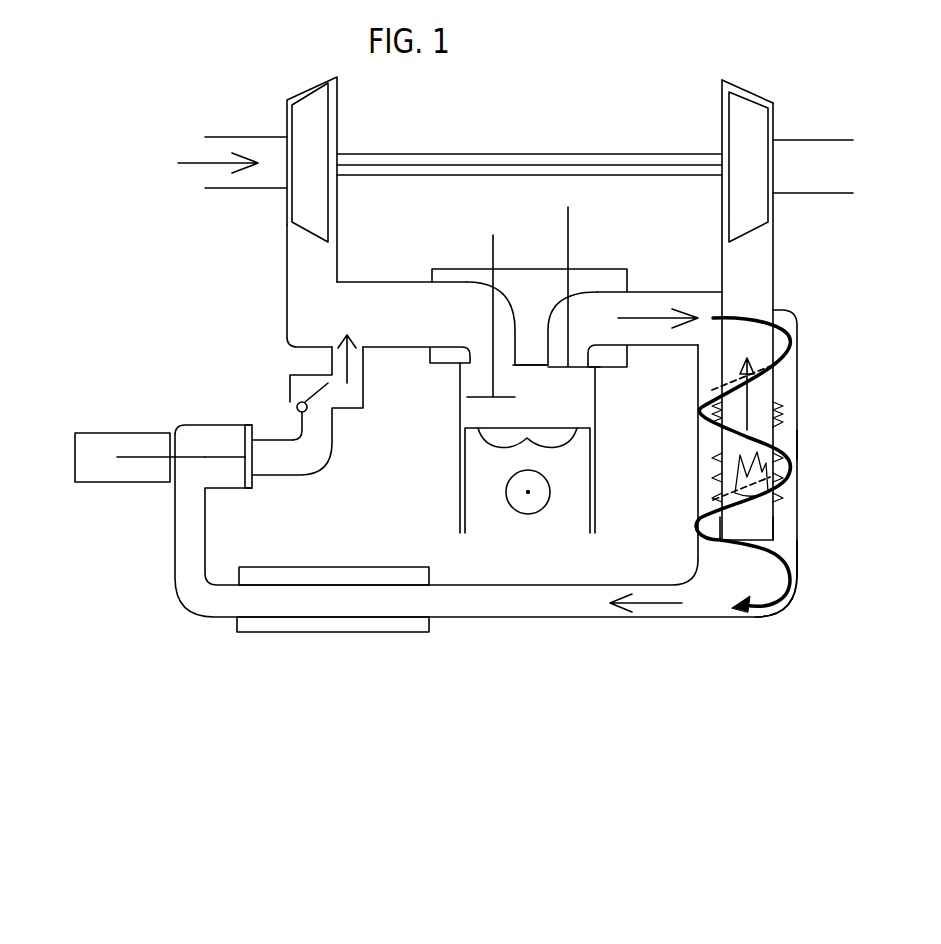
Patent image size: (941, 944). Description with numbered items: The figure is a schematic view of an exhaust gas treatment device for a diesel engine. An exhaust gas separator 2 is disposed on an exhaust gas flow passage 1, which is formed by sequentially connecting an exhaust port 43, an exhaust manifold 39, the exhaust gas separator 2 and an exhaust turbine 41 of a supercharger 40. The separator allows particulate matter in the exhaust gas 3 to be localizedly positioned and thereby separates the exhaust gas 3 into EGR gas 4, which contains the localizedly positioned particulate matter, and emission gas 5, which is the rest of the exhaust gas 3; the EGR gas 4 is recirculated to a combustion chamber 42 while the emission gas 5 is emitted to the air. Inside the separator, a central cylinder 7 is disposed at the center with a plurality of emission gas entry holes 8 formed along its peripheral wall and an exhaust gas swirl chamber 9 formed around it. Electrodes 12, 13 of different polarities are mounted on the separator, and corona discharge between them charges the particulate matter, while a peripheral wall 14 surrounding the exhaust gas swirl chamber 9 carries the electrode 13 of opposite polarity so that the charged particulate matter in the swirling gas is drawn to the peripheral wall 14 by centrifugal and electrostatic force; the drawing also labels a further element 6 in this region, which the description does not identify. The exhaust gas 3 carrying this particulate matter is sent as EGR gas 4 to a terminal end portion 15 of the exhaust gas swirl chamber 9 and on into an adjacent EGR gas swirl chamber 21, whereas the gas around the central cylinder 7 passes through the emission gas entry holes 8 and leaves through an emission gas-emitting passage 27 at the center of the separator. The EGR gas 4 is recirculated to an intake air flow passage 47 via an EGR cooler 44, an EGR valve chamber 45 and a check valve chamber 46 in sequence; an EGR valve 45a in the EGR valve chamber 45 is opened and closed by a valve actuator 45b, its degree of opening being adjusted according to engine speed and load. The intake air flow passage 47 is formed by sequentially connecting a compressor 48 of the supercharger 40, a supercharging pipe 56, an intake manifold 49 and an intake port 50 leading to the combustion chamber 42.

The exhaust gas flow passage 1 is at (679, 274).
The exhaust gas separator 2 is at (817, 433).
The exhaust gas 3 is at (645, 318).
The EGR gas 4 is at (350, 363).
The emission gas 5 is at (730, 387).
The first electrode 6 is at (780, 415).
The central cylinder 7 is at (773, 520).
The emission gas entry holes 8 is at (773, 482).
The exhaust gas swirl chamber 9 is at (793, 445).
The electrode 12 is at (820, 456).
The electrode 13 is at (833, 484).
The peripheral wall 14 is at (797, 505).
The terminal end portion 15 is at (783, 545).
The EGR gas swirl chamber 21 is at (753, 567).
The emission gas-emitting passage 27 is at (752, 345).
The exhaust manifold 39 is at (692, 292).
The supercharger 40 is at (578, 139).
The exhaust turbine 41 is at (762, 100).
The combustion chamber 42 is at (552, 392).
The exhaust port 43 is at (595, 292).
The EGR cooler 44 is at (323, 632).
The EGR valve chamber 45 is at (240, 440).
The EGR valve 45a is at (227, 460).
The valve actuator 45b is at (117, 470).
The check valve chamber 46 is at (300, 395).
The intake air flow passage 47 is at (394, 272).
The compressor 48 is at (308, 92).
The intake manifold 49 is at (408, 282).
The intake port 50 is at (463, 282).
The supercharging pipe 56 is at (337, 260).